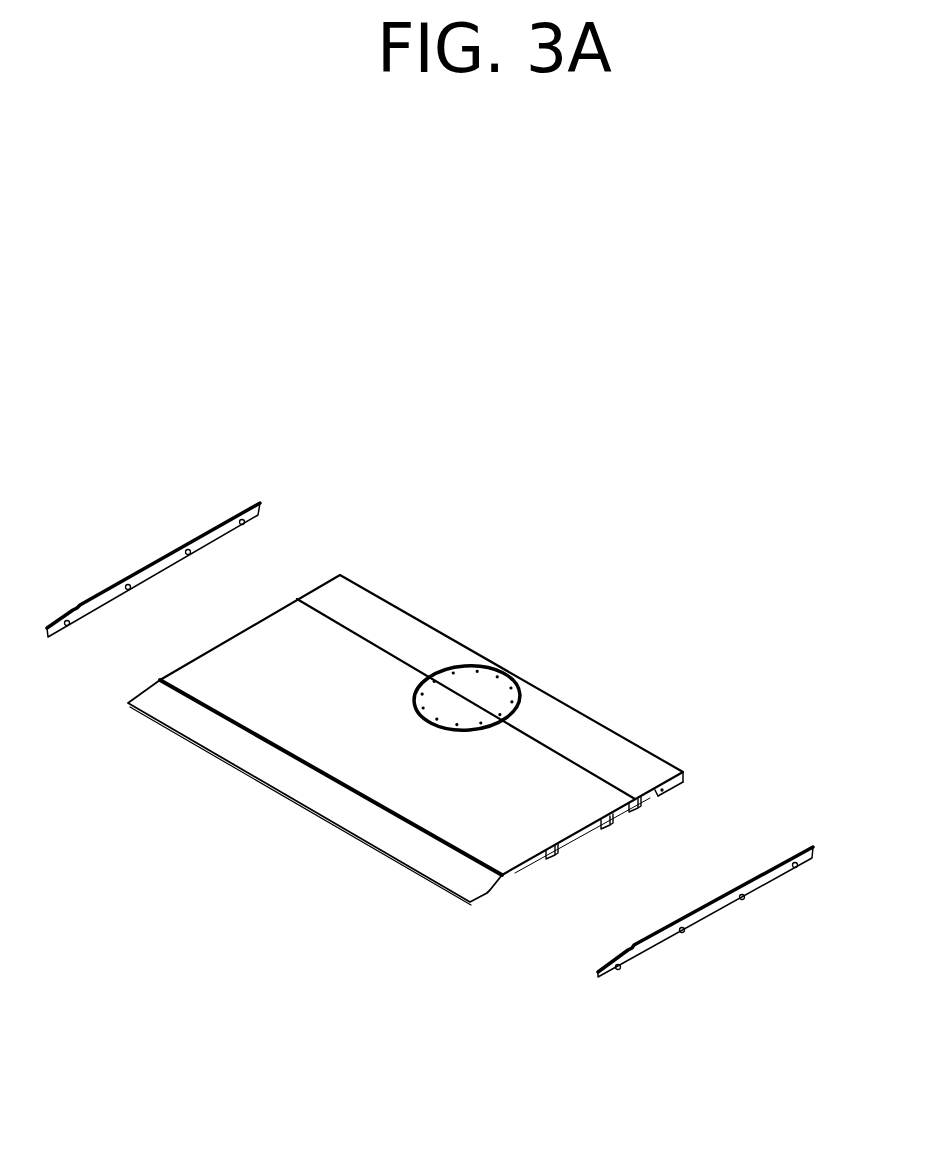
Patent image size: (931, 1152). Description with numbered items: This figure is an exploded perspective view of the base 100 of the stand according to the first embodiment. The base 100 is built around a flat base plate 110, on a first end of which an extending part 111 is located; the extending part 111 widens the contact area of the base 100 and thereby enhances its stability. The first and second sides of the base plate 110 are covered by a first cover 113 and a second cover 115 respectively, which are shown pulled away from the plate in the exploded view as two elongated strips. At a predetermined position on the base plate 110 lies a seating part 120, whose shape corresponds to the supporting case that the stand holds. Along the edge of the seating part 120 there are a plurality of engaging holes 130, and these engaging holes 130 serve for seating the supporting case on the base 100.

The base 100 is at (692, 517).
The base plate 110 is at (432, 800).
The extending part 111 is at (267, 770).
The first cover 113 is at (140, 557).
The second cover 115 is at (713, 920).
The seating part 120 is at (472, 680).
The engaging hole 130 is at (525, 678).